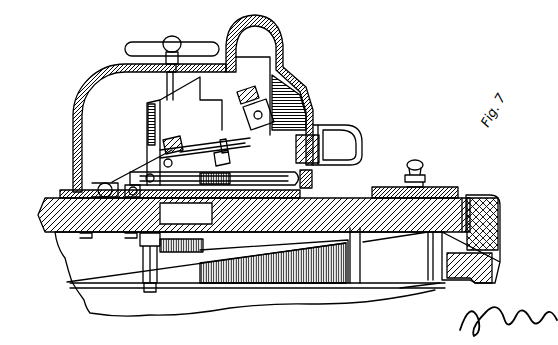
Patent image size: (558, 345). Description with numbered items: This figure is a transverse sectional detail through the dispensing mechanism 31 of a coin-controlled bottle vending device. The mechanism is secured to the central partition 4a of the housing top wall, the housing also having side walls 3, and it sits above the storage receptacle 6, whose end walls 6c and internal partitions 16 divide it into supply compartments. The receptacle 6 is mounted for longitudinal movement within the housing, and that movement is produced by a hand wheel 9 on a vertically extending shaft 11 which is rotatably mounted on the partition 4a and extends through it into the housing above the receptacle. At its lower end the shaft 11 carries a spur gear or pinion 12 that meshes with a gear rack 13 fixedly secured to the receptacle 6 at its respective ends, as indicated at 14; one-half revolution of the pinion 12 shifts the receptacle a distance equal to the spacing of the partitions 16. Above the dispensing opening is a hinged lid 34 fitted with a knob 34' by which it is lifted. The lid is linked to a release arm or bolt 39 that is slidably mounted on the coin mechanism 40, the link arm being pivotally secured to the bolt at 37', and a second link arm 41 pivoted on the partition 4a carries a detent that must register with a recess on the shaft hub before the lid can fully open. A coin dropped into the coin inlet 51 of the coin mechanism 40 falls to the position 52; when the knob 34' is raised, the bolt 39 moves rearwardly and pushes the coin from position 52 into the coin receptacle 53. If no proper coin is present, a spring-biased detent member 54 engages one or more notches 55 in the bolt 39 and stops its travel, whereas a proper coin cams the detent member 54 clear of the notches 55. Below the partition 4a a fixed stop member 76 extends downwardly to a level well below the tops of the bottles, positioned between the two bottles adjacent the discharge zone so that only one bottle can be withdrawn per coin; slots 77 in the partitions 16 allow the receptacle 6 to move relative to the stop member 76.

The side walls 3 is at (500, 256).
The central partition 4a is at (58, 200).
The storage receptacle 6 is at (279, 310).
The end walls 6c is at (308, 305).
The hand wheel 9 is at (204, 42).
The vertically extending shaft 11 is at (168, 88).
The spur gear or pinion 12 is at (205, 247).
The gear rack 13 is at (140, 252).
The rack securement 14 is at (165, 272).
The partitions 16 is at (407, 292).
The dispensing mechanism 31 is at (114, 56).
The hinged lid 34 is at (415, 179).
The knob 34' is at (427, 162).
The pivot 37' is at (116, 175).
The release arm or bolt 39 is at (258, 172).
The coin mechanism 40 is at (303, 84).
The second link arm 41 is at (137, 167).
The coin inlet 51 is at (262, 30).
The coin position 52 is at (240, 150).
The coin receptacle 53 is at (186, 213).
The spring-biased detent member 54 is at (184, 146).
The notches 55 is at (205, 146).
The fixed stop member 76 is at (349, 262).
The slots 77 is at (368, 256).